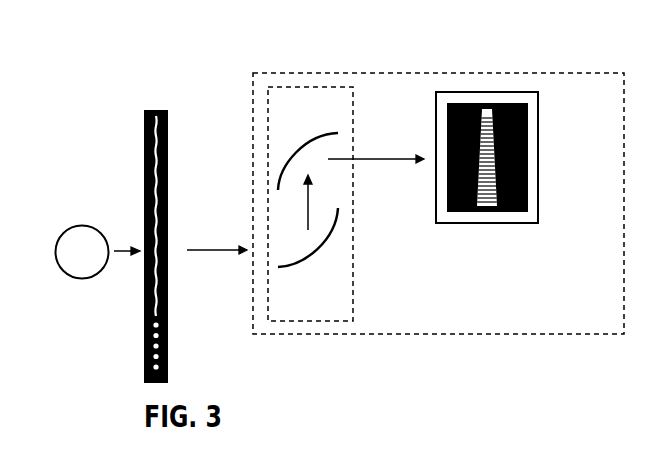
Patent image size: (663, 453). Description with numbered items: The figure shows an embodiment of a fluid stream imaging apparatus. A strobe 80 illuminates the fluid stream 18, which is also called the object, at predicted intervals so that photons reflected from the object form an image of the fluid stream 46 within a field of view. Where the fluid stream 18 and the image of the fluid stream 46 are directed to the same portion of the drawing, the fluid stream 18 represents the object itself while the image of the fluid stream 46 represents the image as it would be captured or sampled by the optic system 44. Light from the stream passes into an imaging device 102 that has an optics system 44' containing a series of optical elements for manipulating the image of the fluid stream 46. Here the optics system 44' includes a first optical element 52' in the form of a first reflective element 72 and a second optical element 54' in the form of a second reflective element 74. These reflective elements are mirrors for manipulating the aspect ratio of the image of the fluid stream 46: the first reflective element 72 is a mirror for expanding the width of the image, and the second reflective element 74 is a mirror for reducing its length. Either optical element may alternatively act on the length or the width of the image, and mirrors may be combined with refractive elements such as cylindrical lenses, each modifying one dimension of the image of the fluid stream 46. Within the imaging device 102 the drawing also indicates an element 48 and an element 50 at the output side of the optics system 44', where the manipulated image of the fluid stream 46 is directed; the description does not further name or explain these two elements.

The fluid stream 18 is at (157, 110).
The image of the fluid stream 46 is at (168, 130).
The strobe 80 is at (75, 242).
The second optical element 54' is at (272, 101).
The second reflective element 74 is at (299, 145).
The first optical element 52' is at (364, 250).
The first reflective element 72 is at (322, 249).
The optics system 44' is at (310, 204).
The optic system 44 is at (310, 204).
The imaging device 102 is at (438, 203).
The display 48 is at (532, 129).
The image 50 is at (518, 102).